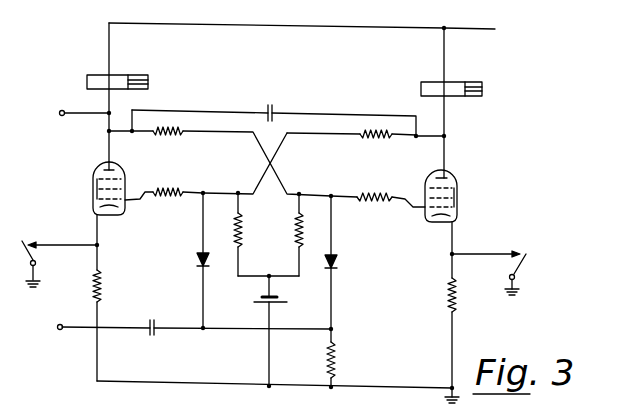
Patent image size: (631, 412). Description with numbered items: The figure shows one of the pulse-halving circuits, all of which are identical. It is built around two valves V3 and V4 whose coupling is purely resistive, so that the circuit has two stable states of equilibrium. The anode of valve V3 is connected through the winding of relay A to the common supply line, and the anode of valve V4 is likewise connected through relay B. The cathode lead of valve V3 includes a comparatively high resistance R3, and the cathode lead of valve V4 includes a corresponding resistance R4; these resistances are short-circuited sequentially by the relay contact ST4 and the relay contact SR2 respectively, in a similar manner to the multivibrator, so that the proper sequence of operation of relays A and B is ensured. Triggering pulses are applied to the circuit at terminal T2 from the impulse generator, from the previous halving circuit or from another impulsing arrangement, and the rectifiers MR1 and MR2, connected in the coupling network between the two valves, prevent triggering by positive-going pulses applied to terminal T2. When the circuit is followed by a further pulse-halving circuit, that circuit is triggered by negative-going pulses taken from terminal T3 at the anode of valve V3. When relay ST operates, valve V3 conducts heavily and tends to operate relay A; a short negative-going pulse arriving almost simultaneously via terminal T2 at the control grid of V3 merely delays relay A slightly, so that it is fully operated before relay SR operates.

The relay A is at (84, 77).
The relay B is at (503, 88).
The terminal T3 is at (79, 122).
The terminal T2 is at (56, 318).
The valve V3 is at (109, 188).
The valve V4 is at (452, 195).
The resistance R3 is at (83, 286).
The resistance R4 is at (461, 295).
The rectifier MR1 is at (184, 260).
The rectifier MR2 is at (349, 263).
The relay contact ST4 is at (54, 257).
The relay contact SR2 is at (490, 265).